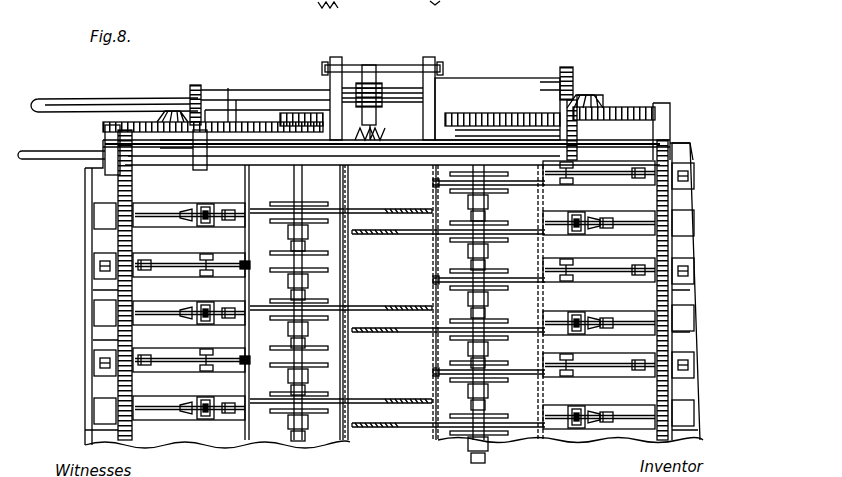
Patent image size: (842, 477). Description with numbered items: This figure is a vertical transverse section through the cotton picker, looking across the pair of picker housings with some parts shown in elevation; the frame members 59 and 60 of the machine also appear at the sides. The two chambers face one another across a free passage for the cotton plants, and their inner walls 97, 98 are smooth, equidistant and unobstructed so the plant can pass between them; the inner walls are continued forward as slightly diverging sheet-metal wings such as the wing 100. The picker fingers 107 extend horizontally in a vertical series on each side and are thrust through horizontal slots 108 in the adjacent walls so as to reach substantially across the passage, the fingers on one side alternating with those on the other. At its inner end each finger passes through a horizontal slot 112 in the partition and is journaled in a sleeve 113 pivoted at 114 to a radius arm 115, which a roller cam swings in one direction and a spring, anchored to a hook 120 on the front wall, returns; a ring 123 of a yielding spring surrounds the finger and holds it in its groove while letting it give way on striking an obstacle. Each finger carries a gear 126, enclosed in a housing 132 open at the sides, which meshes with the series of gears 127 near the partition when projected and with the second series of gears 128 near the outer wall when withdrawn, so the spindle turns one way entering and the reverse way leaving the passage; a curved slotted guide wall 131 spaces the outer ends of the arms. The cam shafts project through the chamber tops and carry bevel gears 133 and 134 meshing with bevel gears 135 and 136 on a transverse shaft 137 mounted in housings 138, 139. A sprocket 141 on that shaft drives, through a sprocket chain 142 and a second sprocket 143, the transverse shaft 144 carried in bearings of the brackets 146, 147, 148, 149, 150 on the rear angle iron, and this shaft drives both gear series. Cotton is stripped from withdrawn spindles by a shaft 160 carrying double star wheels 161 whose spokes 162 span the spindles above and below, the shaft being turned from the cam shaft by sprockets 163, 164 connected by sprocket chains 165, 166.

The frame member 59 is at (700, 266).
The frame member 60 is at (118, 300).
The inner wall of picker chamber 97 is at (349, 252).
The inner wall of picker chamber 98 is at (434, 292).
The diverging wing 100 is at (499, 302).
The picker finger 107 is at (380, 212).
The horizontal slot 108 is at (420, 186).
The horizontal slot in partition 112 is at (248, 260).
The sleeve 113 is at (228, 209).
The pivot 114 is at (187, 222).
The radius arm 115 is at (162, 213).
The hook 120 is at (555, 312).
The ring 123 is at (530, 382).
The gear on picker finger 126 is at (200, 205).
The series of gears 127 is at (441, 293).
The second series of gears 128 is at (93, 246).
The curved slotted guide wall 131 is at (150, 420).
The housing 132 is at (214, 226).
The bevel gear 133 is at (580, 96).
The bevel gear 134 is at (193, 84).
The bevel gear 135 is at (571, 74).
The bevel gear 136 is at (203, 88).
The transverse shaft 137 is at (130, 98).
The housing 138 is at (262, 89).
The housing 139 is at (482, 78).
The sprocket 141 is at (368, 64).
The sprocket chain 142 is at (382, 86).
The second sprocket 143 is at (383, 128).
The transverse shaft 144 is at (420, 152).
The bracket 146 is at (226, 146).
The bracket 147 is at (354, 129).
The bracket 148 is at (507, 129).
The bracket 149 is at (676, 112).
The bracket 150 is at (106, 146).
The shaft 160 is at (293, 178).
The double star wheel 161 is at (308, 268).
The spoke 162 is at (308, 360).
The sprocket 163 is at (316, 117).
The sprocket 164 is at (166, 110).
The sprocket chain 165 is at (560, 82).
The sprocket chain 166 is at (233, 99).